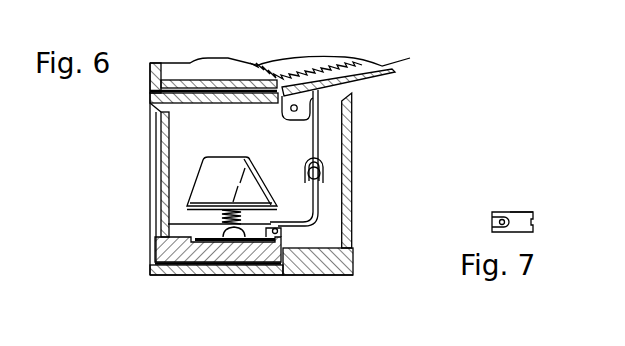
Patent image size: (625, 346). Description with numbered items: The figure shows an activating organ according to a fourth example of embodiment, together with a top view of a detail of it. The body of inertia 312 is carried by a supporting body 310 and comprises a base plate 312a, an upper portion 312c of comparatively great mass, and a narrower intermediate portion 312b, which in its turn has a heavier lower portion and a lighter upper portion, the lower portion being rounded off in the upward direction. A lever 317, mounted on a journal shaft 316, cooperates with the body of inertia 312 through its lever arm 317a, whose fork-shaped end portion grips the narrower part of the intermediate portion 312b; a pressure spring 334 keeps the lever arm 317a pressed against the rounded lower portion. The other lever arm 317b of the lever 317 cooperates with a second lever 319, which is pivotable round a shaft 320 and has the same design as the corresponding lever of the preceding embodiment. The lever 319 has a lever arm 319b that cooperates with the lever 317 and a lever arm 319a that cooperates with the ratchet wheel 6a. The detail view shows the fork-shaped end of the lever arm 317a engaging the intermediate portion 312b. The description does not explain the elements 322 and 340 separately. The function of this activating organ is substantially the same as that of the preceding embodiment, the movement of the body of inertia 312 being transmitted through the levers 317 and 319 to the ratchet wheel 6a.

In FIG. 6, the ratchet wheel 6a is at (372, 62).
In FIG. 6, the supporting body 310 is at (152, 100).
In FIG. 6, the body of inertia 312 is at (150, 179).
In FIG. 6, the base plate 312a is at (195, 273).
In FIG. 6, the intermediate portion 312b is at (167, 224).
In FIG. 7, the intermediate portion 312b is at (490, 222).
In FIG. 6, the upper portion 312c is at (168, 160).
In FIG. 6, the journal shaft 316 is at (327, 272).
In FIG. 6, the lever 317 is at (320, 210).
In FIG. 6, the lever arm 317a is at (255, 273).
In FIG. 7, the lever arm 317a is at (556, 190).
In FIG. 6, the lever arm 317b is at (320, 190).
In FIG. 6, the lever 319 is at (320, 132).
In FIG. 6, the lever arm 319a is at (321, 77).
In FIG. 6, the lever arm 319b is at (322, 153).
In FIG. 6, the shaft 320 is at (355, 91).
In FIG. 6, the spring clip 322 is at (323, 172).
In FIG. 6, the pressure spring 334 is at (244, 186).
In FIG. 6, the lamp base 340 is at (195, 228).